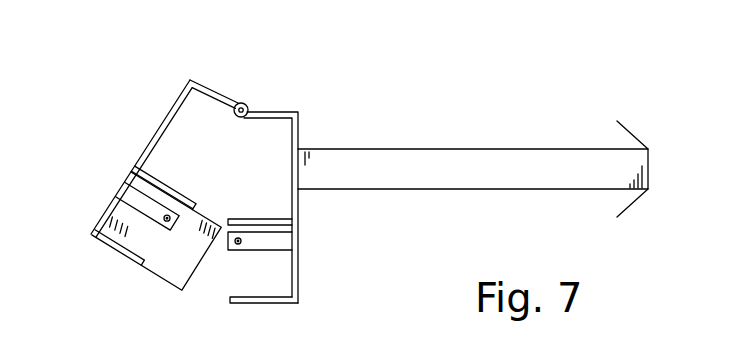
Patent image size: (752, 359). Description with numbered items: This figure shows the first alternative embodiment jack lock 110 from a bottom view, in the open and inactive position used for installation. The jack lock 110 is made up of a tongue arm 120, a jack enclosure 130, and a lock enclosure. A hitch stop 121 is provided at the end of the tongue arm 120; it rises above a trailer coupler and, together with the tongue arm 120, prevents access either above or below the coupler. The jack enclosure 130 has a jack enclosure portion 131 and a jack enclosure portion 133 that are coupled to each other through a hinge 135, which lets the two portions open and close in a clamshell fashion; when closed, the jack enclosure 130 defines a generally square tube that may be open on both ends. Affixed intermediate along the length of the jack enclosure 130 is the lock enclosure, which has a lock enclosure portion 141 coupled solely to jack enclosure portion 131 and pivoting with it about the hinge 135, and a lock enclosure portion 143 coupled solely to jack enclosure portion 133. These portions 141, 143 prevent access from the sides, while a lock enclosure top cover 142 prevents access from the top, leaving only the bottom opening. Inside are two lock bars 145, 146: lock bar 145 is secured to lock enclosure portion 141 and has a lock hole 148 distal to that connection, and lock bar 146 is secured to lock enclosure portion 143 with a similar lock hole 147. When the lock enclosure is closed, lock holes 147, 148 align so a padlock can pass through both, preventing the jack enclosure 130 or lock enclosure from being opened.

The jack lock 110 is at (376, 108).
The tongue arm 120 is at (523, 190).
The hitch stop 121 is at (628, 134).
The jack enclosure 130 is at (174, 104).
The jack enclosure portion 131 is at (184, 78).
The jack enclosure portion 133 is at (297, 189).
The hinge 135 is at (245, 102).
The lock enclosure portion 141 is at (112, 250).
The lock enclosure top cover 142 is at (151, 266).
The lock enclosure portion 143 is at (279, 304).
The lock bar 145 is at (130, 198).
The lock bar 146 is at (286, 243).
The lock hole 147 is at (242, 242).
The lock hole 148 is at (171, 222).